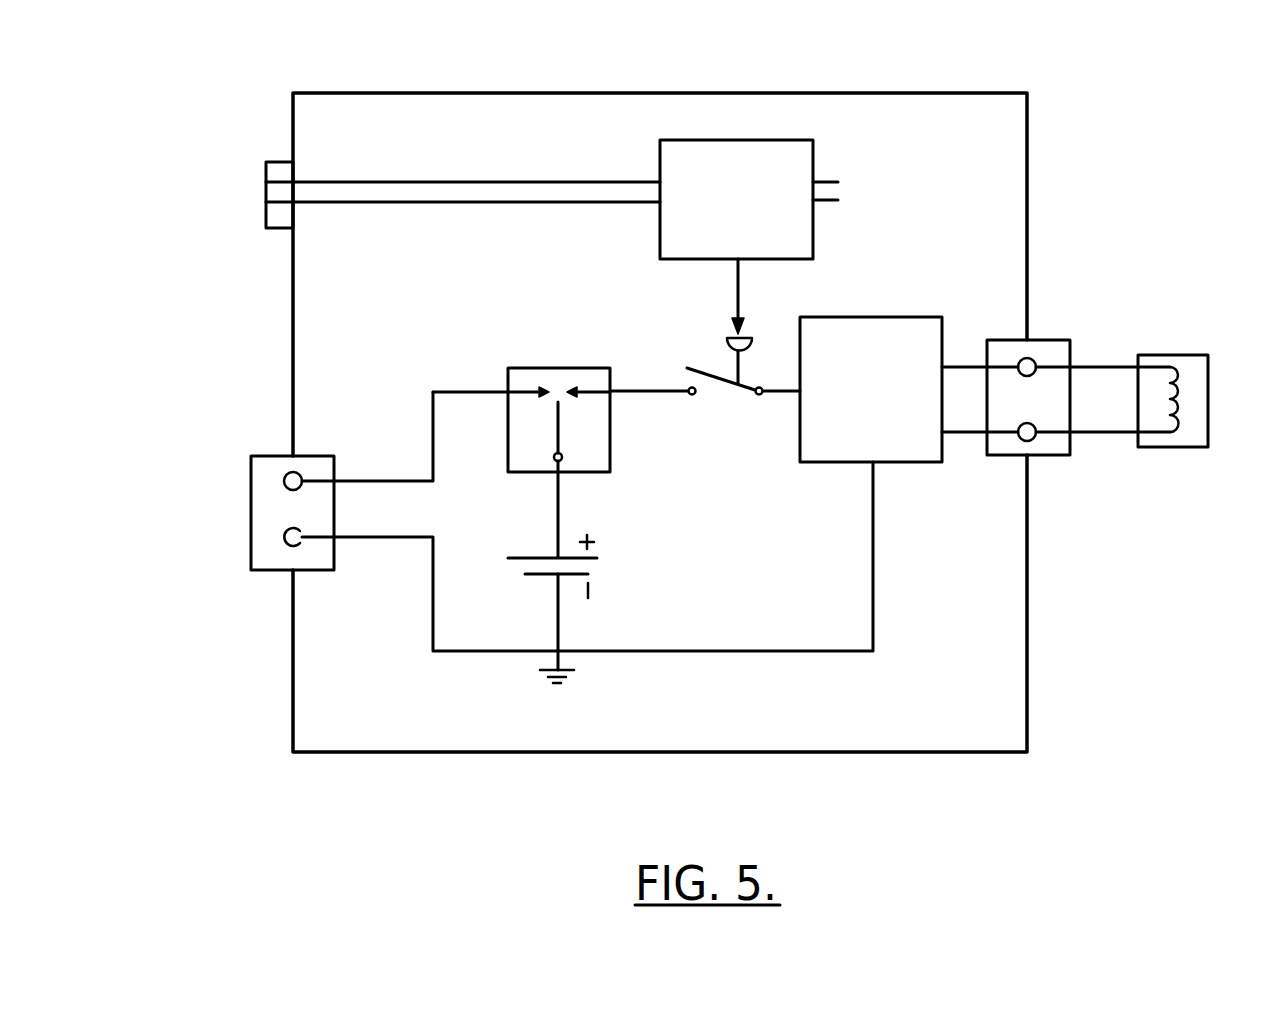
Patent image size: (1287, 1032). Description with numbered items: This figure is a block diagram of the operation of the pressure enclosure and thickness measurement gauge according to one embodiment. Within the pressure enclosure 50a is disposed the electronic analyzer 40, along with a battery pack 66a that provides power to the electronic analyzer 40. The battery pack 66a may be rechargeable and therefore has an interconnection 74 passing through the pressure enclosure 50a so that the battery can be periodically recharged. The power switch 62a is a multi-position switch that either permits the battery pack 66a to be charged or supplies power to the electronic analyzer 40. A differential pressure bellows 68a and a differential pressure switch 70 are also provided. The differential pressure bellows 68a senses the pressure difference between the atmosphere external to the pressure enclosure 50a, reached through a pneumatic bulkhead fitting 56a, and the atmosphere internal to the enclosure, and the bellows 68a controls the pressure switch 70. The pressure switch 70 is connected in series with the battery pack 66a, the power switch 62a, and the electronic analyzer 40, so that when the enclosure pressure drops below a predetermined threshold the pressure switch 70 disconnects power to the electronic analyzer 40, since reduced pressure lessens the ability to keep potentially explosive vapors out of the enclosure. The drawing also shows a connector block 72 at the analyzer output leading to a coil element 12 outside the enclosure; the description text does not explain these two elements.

The pressure enclosure 50a is at (967, 93).
The pneumatic bulkhead fitting 56a is at (285, 160).
The differential pressure bellows 68a is at (788, 140).
The differential pressure switch 70 is at (730, 380).
The power switch 62a is at (565, 368).
The battery pack 66a is at (598, 557).
The interconnection 74 is at (272, 455).
The electronic analyzer 40 is at (875, 317).
The connector 72 is at (1055, 340).
The solenoid valve 12 is at (1180, 355).